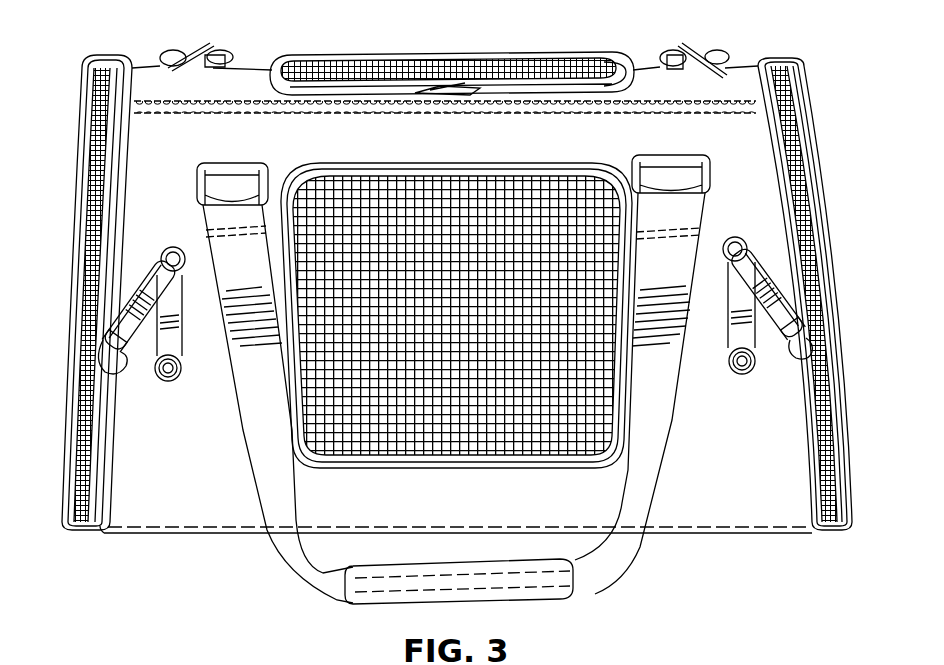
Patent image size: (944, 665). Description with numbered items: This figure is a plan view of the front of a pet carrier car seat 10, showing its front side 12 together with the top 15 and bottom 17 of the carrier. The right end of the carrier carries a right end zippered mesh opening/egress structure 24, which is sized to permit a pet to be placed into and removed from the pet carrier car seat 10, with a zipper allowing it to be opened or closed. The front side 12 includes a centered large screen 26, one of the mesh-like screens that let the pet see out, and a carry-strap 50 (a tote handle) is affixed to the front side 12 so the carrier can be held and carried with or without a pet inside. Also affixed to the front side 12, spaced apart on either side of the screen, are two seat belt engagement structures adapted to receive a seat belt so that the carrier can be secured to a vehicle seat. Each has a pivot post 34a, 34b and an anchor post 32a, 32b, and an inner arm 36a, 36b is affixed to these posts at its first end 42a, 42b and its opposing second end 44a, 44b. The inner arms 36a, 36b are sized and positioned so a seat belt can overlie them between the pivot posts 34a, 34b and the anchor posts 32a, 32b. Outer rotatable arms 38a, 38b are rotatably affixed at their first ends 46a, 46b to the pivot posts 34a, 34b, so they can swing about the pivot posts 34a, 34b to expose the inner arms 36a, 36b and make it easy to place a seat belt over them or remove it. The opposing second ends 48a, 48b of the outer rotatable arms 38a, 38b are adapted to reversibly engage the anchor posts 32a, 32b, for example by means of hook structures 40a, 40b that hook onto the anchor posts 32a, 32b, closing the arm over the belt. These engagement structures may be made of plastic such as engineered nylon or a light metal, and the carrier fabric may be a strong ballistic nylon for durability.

The pet carrier car seat 10 is at (869, 116).
The front side 12 is at (192, 472).
The top 15 is at (637, 62).
The bottom 17 is at (132, 530).
The right end zippered mesh opening/egress structure 24 is at (790, 60).
The centered large screen 26 is at (596, 182).
The anchor post 32a is at (168, 382).
The anchor post 32b is at (743, 374).
The pivot post 34a is at (173, 248).
The pivot post 34b is at (748, 242).
The inner arm 36a is at (182, 360).
The inner arm 36b is at (728, 328).
The outer rotatable arm 38a is at (125, 298).
The outer rotatable arm 38b is at (790, 297).
The hook structure 40a is at (103, 368).
The hook structure 40b is at (803, 342).
The first end of inner arm 42a is at (212, 282).
The first end of inner arm 42b is at (718, 278).
The second end of inner arm 44a is at (182, 378).
The second end of inner arm 44b is at (729, 362).
The first end of outer rotatable arm 46a is at (140, 264).
The first end of outer rotatable arm 46b is at (765, 256).
The second end of outer rotatable arm 48a is at (97, 347).
The second end of outer rotatable arm 48b is at (818, 340).
The carry-strap 50 is at (593, 592).